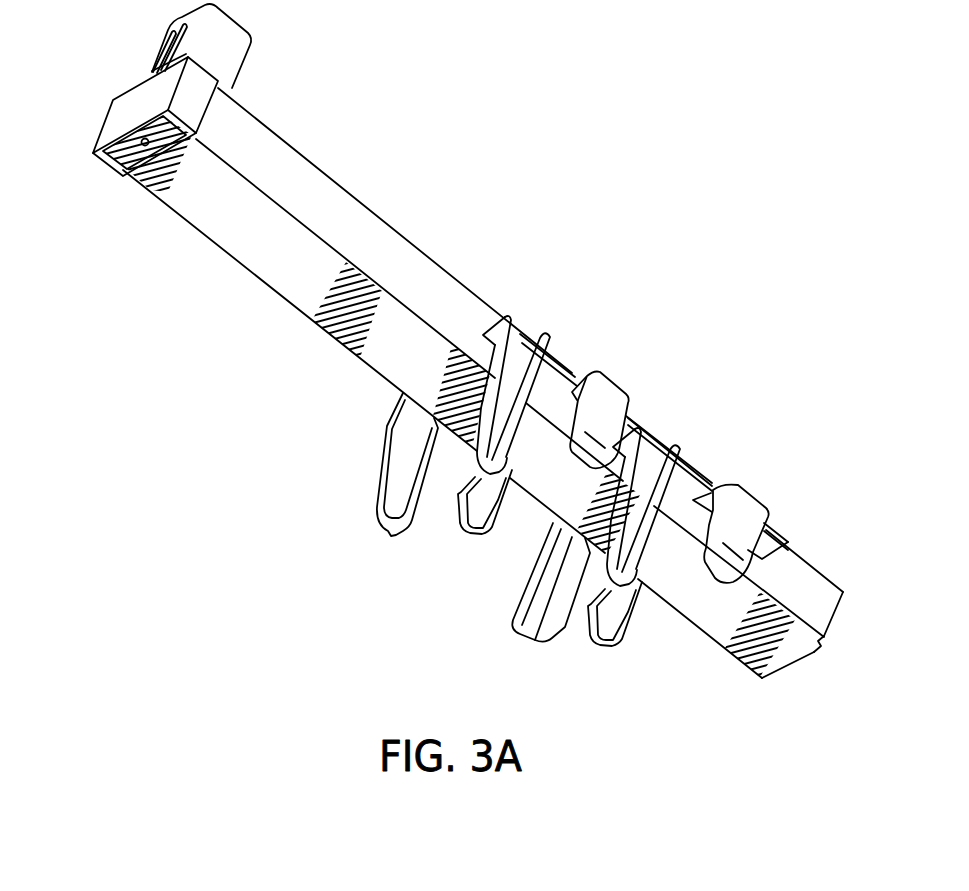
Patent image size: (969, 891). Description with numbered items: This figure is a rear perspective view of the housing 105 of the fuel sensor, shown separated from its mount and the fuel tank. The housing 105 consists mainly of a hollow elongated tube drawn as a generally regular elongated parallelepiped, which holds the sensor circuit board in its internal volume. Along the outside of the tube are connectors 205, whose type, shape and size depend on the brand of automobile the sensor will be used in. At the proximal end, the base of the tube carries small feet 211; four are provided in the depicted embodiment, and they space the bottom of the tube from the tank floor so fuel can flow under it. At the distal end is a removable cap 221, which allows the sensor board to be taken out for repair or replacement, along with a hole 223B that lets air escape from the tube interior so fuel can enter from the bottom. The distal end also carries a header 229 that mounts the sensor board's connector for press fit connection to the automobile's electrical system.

The housing 105 is at (405, 236).
The connectors 205 is at (678, 472).
The feet 211 is at (826, 643).
The cap 221 is at (123, 112).
The hole 223B is at (146, 147).
The header 229 is at (242, 50).